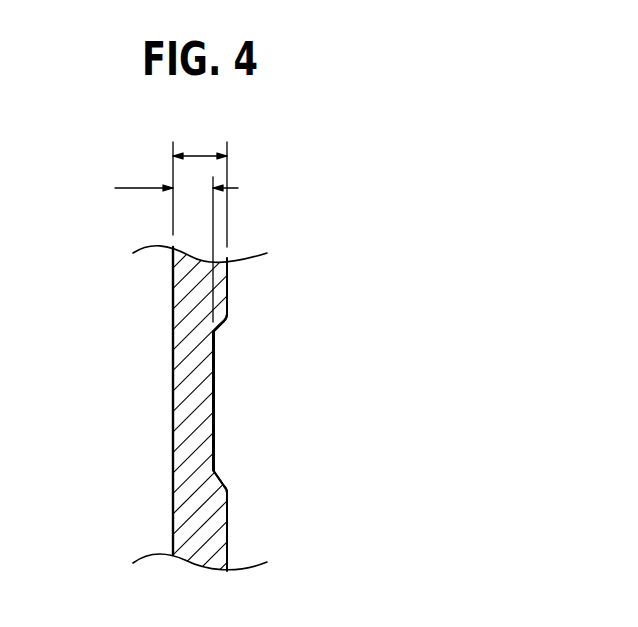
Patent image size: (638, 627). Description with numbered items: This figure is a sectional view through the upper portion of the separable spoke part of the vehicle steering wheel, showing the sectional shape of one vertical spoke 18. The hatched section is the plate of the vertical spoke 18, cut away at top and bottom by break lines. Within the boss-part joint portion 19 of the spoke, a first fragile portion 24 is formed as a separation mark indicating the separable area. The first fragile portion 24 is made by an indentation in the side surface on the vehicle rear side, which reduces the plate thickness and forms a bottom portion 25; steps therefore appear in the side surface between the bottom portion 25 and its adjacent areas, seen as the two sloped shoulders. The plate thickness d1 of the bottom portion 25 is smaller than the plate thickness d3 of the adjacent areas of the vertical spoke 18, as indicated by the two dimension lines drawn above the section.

The vertical spoke 18 is at (173, 524).
The boss-part joint portion 19 is at (232, 345).
The first fragile portion 24 is at (218, 439).
The bottom portion 25 is at (214, 370).
The plate thickness of the bottom portion d1 is at (176, 238).
The plate thickness of adjacent areas d3 is at (200, 183).